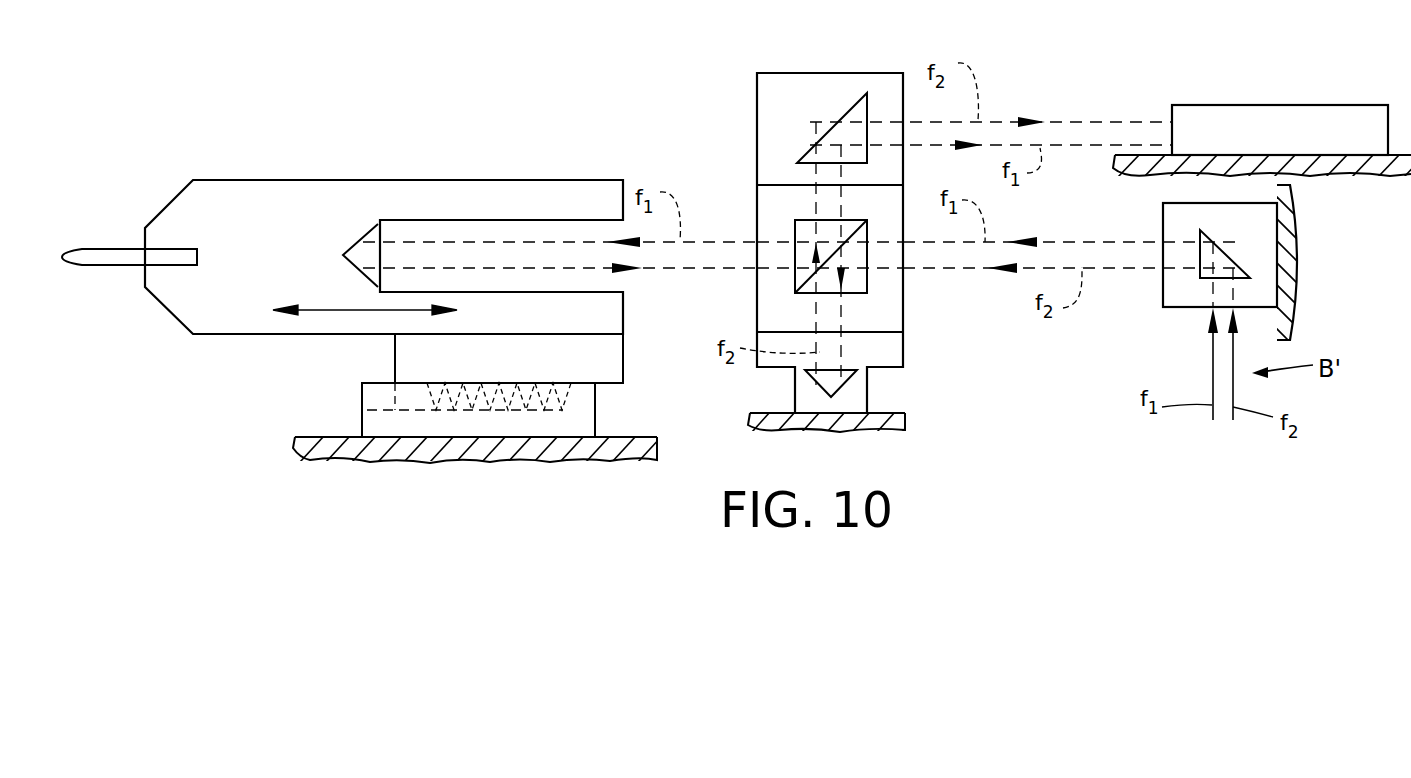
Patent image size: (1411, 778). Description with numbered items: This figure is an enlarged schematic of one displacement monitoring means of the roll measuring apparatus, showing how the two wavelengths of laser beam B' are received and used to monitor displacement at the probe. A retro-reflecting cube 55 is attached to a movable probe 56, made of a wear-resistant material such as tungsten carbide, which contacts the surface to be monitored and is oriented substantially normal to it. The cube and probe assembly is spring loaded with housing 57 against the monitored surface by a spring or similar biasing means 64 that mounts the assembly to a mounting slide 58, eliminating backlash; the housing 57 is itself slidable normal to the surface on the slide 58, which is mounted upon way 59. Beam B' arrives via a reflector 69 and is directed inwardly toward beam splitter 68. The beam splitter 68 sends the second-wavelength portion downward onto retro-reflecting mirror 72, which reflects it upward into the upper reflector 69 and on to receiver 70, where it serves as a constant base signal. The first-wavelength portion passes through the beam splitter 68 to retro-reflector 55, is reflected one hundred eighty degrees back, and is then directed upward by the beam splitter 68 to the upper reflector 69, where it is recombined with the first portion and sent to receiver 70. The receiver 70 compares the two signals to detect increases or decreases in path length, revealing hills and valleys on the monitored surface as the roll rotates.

The retro-reflecting cube 55 is at (373, 227).
The probe 56 is at (101, 253).
The housing 57 is at (392, 192).
The mounting slide 58 is at (410, 357).
The way 59 is at (578, 420).
The spring 64 is at (498, 383).
The beam splitter 68 is at (770, 202).
The reflector 69 is at (798, 85).
The beam receiver/resolver 70 is at (1230, 118).
The retro-reflecting mirror 72 is at (847, 367).